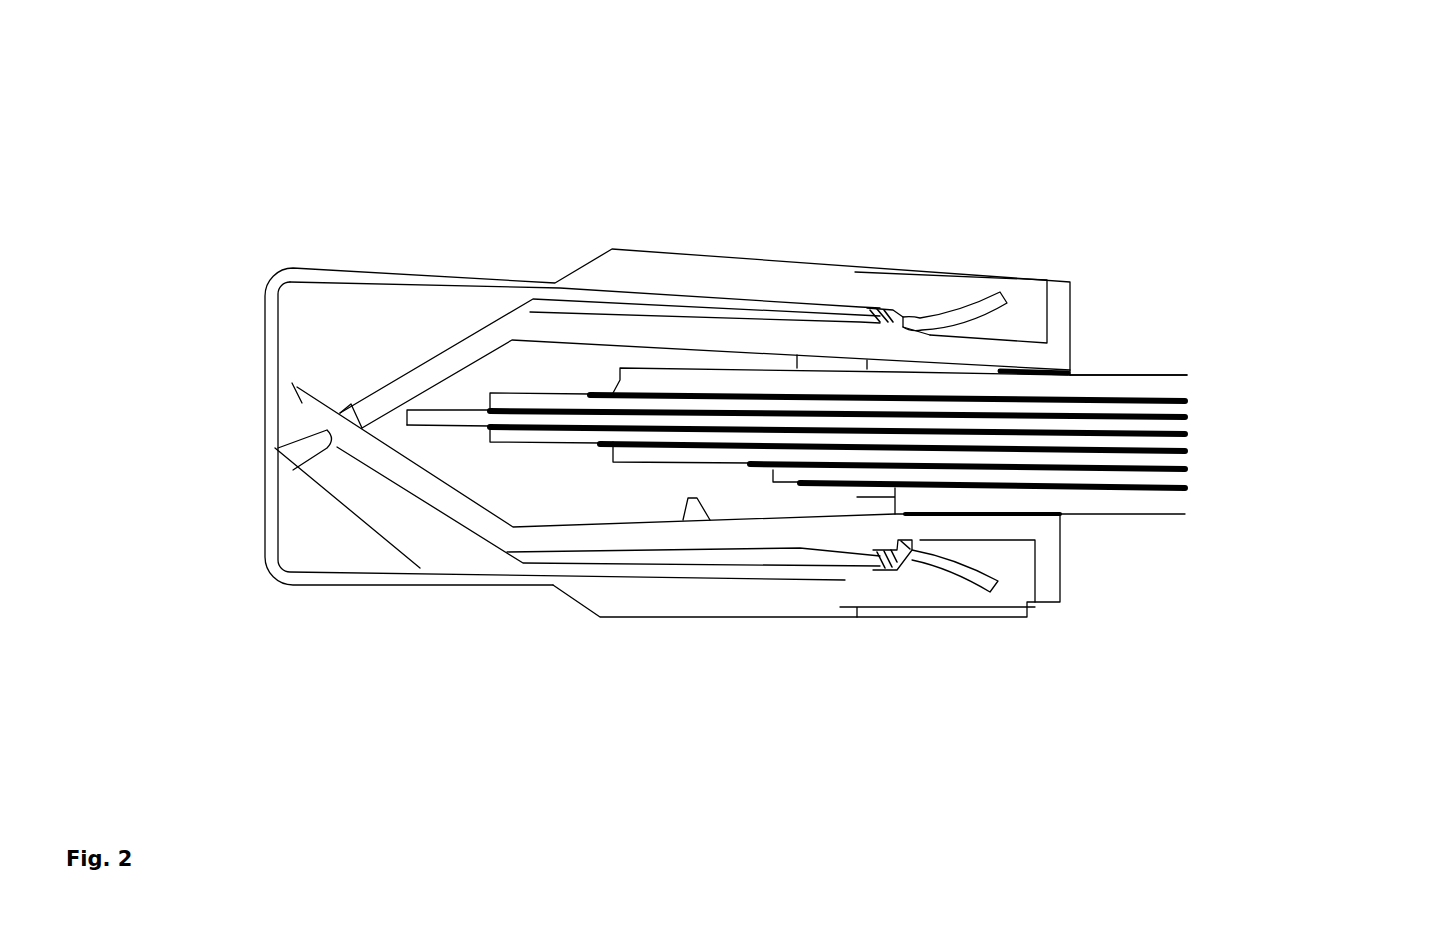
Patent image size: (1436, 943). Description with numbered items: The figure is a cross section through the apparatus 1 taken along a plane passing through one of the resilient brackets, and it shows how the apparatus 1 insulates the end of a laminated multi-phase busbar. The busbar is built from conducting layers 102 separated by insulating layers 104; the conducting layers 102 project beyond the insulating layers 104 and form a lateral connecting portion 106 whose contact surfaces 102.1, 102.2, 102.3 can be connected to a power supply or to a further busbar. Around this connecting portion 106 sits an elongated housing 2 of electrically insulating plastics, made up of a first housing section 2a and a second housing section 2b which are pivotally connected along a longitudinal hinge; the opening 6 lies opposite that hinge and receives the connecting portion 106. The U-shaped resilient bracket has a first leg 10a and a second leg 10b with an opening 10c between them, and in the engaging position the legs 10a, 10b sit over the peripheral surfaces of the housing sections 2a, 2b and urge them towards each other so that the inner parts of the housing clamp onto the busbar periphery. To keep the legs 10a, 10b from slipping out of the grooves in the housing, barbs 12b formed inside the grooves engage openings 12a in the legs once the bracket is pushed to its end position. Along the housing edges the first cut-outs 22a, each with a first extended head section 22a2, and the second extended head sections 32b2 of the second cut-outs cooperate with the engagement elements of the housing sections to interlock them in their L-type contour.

The apparatus 1 is at (243, 238).
The elongated housing 2 is at (454, 336).
The first housing section 2a is at (415, 373).
The second housing section 2b is at (388, 466).
The opening 6 is at (1075, 367).
The first leg 10a is at (457, 274).
The second leg 10b is at (464, 592).
The opening 10c is at (985, 326).
The openings 12a is at (913, 328).
The barbs 12b is at (893, 330).
The first cut-outs 22a is at (343, 386).
The first extended head section 22a2 is at (306, 446).
The second extended head section 32b2 is at (302, 403).
The conducting layers 102 is at (1190, 396).
The contact surface 102.1 is at (557, 383).
The contact surface 102.2 is at (560, 456).
The contact surface 102.3 is at (806, 489).
The insulating layers 104 is at (591, 417).
The lateral connecting portion 106 is at (1156, 376).